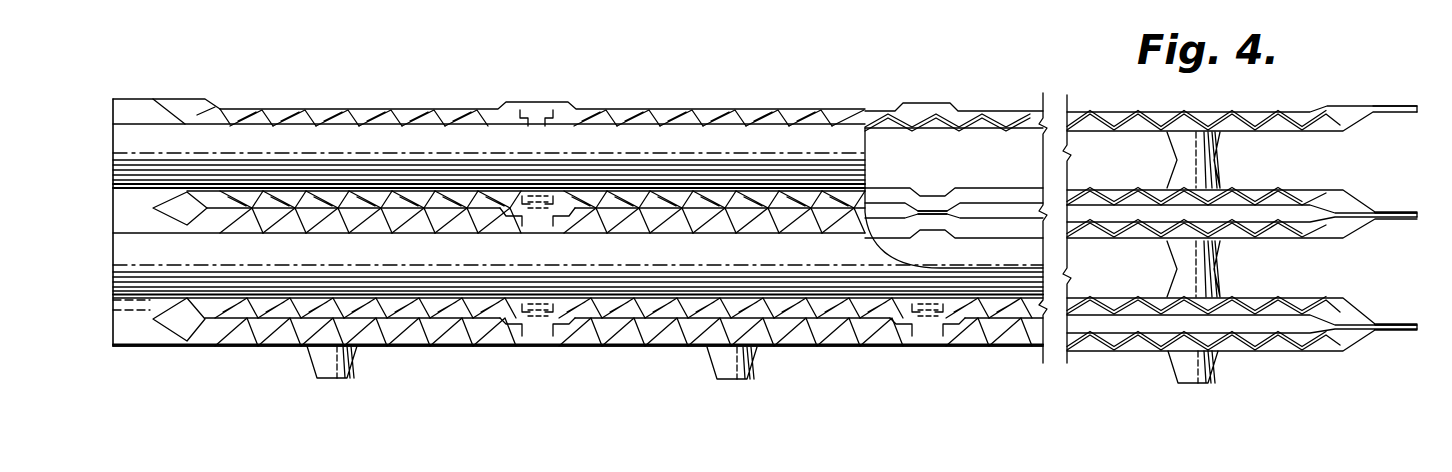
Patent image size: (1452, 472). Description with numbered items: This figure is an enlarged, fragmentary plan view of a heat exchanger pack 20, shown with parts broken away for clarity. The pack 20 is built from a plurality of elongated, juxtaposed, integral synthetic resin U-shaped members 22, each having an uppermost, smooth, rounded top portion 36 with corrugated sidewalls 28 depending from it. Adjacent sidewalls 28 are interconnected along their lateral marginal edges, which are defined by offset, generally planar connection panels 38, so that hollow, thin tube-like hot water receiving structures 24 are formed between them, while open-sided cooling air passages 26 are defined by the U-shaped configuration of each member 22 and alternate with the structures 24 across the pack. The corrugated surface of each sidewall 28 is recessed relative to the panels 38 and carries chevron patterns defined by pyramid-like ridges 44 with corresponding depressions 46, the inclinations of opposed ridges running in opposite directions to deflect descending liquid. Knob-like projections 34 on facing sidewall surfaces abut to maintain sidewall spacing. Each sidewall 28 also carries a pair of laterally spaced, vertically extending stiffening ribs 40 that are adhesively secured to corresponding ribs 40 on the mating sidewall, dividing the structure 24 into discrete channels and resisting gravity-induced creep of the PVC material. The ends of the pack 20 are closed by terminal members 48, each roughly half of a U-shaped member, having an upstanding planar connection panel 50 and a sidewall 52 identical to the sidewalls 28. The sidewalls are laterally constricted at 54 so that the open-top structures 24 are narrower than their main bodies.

The heat exchanger pack 20 is at (1075, 103).
The U-shaped member 22 is at (111, 237).
The hot water receiving structure 24 is at (323, 318).
The cooling air passage 26 is at (1242, 244).
The sidewall 28 is at (460, 194).
The knob-like projection 34 is at (1219, 147).
The top portion 36 is at (590, 140).
The connection panel 38 is at (1397, 212).
The stiffening rib 40 is at (540, 210).
The ridge 44 is at (1103, 236).
The depression 46 is at (1093, 234).
The terminal member 48 is at (192, 347).
The upstanding connection panel 50 is at (412, 347).
The terminal member sidewall 52 is at (650, 346).
The lateral constriction 54 is at (197, 210).